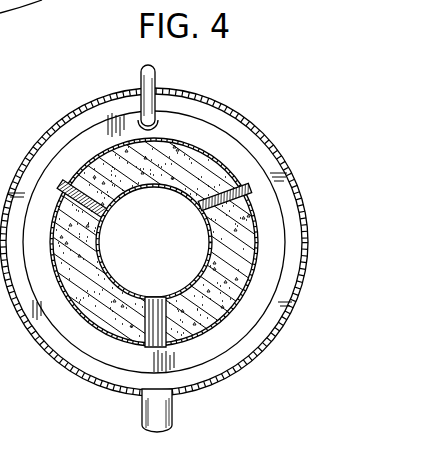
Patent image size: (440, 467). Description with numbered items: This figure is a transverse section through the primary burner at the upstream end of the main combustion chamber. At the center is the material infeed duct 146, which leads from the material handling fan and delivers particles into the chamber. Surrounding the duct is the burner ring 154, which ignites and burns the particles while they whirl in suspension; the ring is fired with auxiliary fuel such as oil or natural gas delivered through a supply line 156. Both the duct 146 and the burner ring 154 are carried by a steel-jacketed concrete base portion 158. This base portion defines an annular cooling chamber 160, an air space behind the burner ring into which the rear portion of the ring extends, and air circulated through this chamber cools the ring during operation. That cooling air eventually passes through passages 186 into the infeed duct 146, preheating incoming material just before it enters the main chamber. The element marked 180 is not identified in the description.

The infeed duct 146 is at (128, 294).
The burner ring 154 is at (122, 362).
The supply line 156 is at (156, 78).
The steel-jacketed concrete base portion 158 is at (253, 227).
The annular cooling chamber 160 is at (67, 360).
The lower pin 180 is at (170, 417).
The passages 186 is at (200, 210).